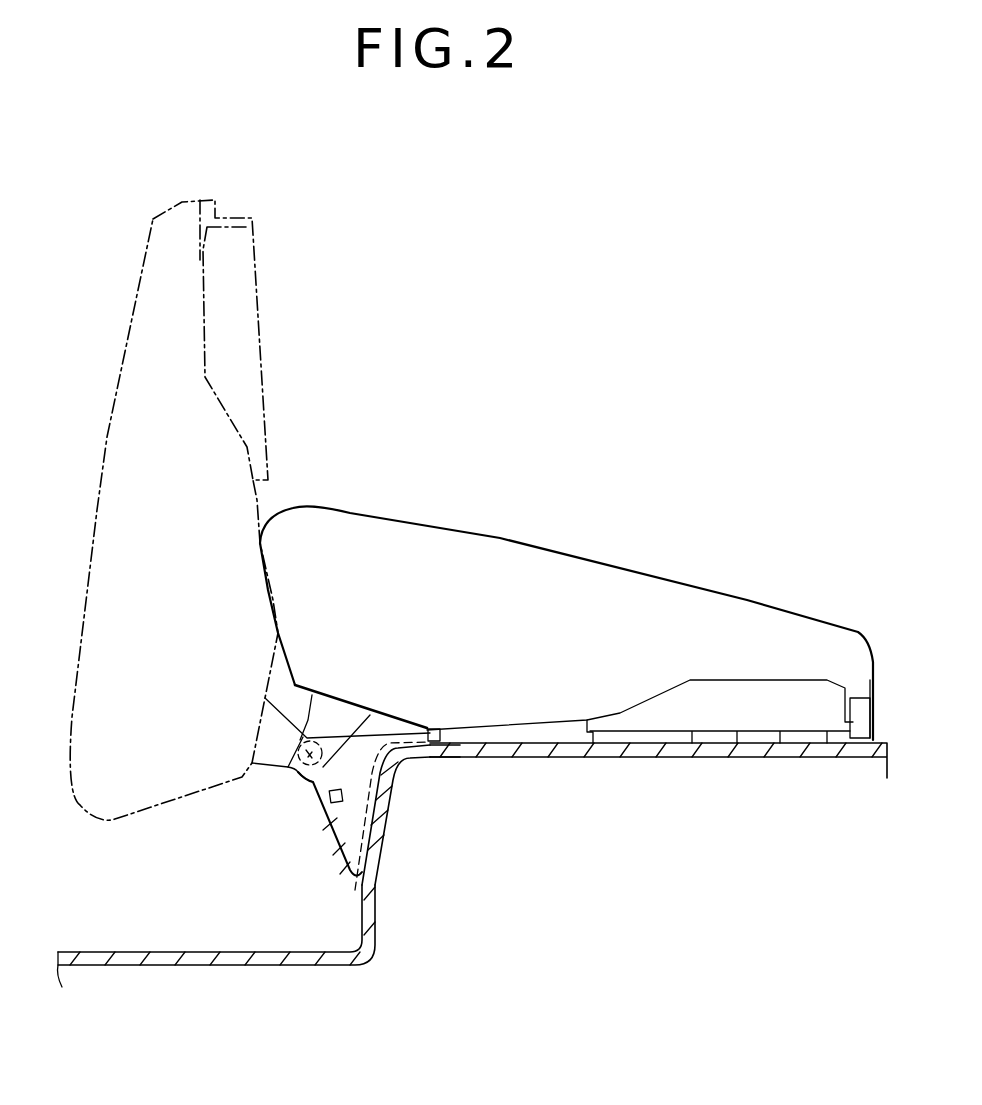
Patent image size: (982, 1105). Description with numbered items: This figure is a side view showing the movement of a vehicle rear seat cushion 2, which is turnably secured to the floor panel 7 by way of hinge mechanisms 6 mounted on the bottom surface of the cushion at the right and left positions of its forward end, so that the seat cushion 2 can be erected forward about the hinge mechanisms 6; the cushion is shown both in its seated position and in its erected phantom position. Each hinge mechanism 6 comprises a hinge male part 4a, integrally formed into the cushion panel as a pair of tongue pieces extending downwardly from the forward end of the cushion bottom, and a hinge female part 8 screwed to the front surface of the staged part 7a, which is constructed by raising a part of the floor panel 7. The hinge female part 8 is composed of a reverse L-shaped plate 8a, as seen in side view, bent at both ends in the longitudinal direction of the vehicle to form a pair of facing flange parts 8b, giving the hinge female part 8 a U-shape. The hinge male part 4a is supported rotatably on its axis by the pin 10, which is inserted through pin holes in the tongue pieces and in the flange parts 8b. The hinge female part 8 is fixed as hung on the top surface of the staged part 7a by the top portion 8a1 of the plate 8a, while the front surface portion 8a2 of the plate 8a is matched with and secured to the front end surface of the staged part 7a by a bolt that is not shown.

The seat cushion 2 is at (107, 437).
The hinge male part 4a is at (272, 757).
The hinge mechanism 6 is at (297, 782).
The floor panel 7 is at (135, 950).
The staged part 7a is at (543, 747).
The hinge female part 8 is at (342, 850).
The reverse L-shaped plate 8a is at (390, 808).
The top portion 8a1 is at (442, 740).
The front surface portion 8a2 is at (377, 842).
The flange part 8b is at (338, 817).
The pin 10 is at (317, 770).